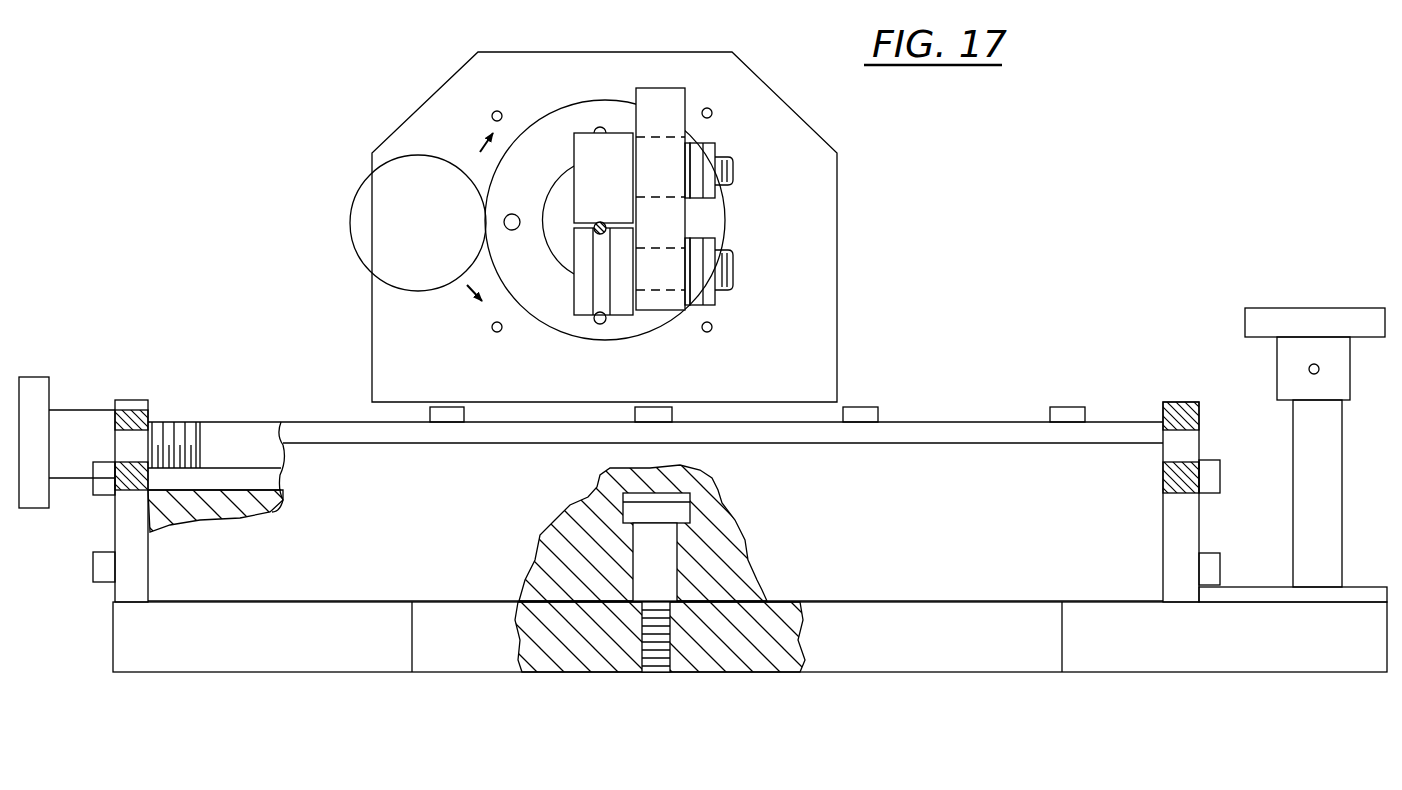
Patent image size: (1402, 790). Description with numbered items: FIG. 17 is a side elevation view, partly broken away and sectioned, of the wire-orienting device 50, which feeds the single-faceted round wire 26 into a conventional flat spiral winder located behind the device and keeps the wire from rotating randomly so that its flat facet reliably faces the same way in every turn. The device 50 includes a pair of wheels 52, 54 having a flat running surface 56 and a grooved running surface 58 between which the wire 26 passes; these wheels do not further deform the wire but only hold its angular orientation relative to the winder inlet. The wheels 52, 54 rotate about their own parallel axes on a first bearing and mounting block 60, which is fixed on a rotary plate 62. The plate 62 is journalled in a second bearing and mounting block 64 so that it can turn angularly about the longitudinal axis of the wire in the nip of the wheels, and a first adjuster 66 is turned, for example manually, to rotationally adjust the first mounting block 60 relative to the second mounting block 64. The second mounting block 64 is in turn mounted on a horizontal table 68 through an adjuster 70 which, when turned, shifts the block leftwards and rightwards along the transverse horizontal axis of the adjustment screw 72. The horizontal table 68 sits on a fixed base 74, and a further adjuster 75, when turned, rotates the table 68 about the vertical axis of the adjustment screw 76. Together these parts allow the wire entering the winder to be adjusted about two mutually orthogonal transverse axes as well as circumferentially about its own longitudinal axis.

The wire 26 is at (615, 197).
The wire-orienting device 50 is at (946, 219).
The wheel 52 is at (574, 148).
The wheel 54 is at (576, 245).
The flat running surface 56 is at (585, 163).
The grooved running surface 58 is at (580, 262).
The first bearing and mounting block 60 is at (677, 100).
The rotary plate 62 is at (570, 107).
The second bearing and mounting block 64 is at (789, 130).
The first adjuster 66 is at (374, 262).
The horizontal table 68 is at (1003, 522).
The adjuster 70 is at (70, 408).
The adjustment screw 72 is at (183, 428).
The fixed base 74 is at (1010, 660).
The adjuster 75 is at (1255, 318).
The adjustment screw 76 is at (657, 662).